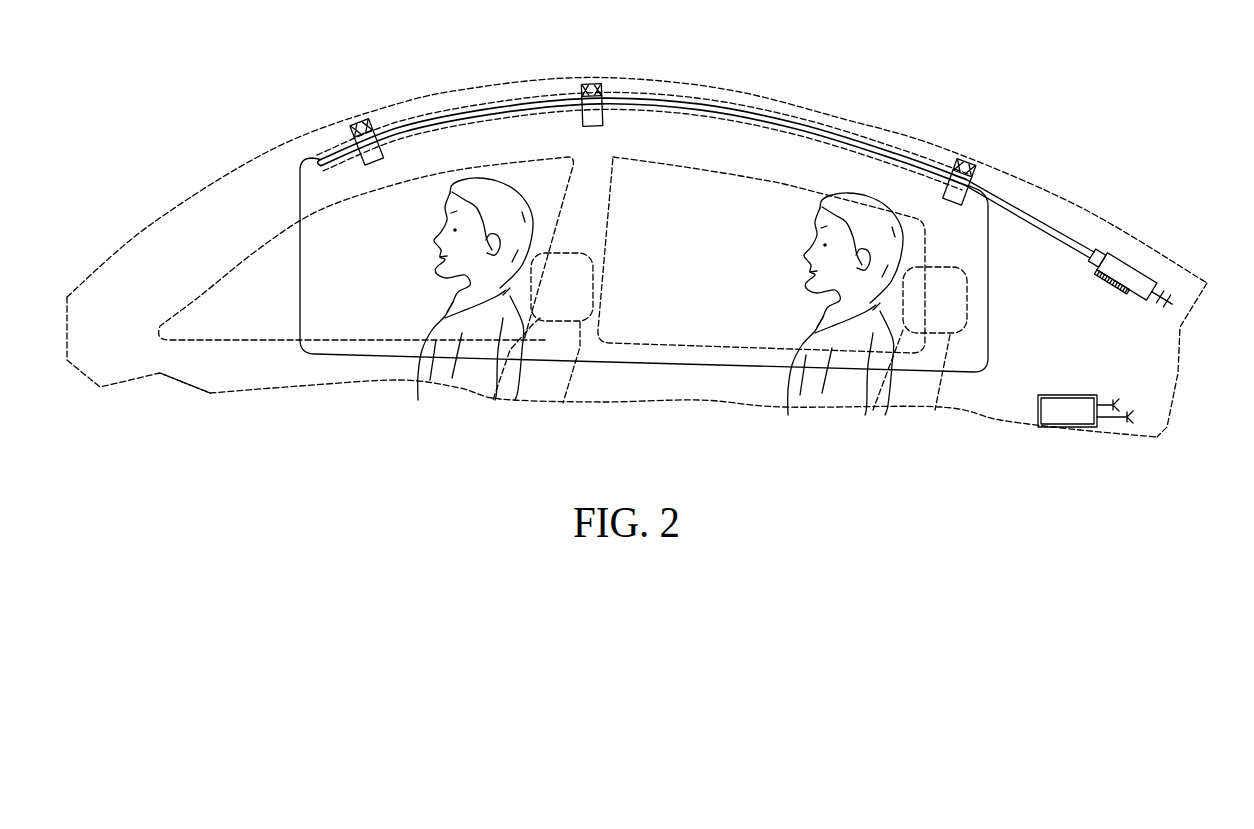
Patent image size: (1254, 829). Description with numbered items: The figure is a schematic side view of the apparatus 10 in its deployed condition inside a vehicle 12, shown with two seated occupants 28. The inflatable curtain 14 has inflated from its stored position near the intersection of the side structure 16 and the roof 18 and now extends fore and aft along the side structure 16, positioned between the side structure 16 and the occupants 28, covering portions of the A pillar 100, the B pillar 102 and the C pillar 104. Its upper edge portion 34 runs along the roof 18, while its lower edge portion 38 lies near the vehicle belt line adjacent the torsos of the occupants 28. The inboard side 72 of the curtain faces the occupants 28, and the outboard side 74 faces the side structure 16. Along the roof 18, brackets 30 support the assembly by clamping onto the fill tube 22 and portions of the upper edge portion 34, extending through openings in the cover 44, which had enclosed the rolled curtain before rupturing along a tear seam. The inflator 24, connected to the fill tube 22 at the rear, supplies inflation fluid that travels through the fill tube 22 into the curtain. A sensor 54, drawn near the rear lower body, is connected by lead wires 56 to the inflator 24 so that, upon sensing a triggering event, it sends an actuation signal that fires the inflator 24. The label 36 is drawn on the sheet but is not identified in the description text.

The apparatus 10 is at (342, 63).
The vehicle 12 is at (277, 150).
The inflatable curtain 14 is at (662, 310).
The side structure 16 is at (618, 383).
The roof 18 is at (737, 90).
The fill tube 22 is at (1047, 232).
The inflator 24 is at (1120, 275).
The occupants 28 is at (418, 257).
The brackets 30 is at (353, 120).
The upper edge portion 34 is at (803, 127).
The front pillar 36 is at (273, 343).
The lower edge portion 38 is at (723, 360).
The cover 44 is at (467, 150).
The sensor 54 is at (1065, 428).
The lead wires 56 is at (1177, 290).
The inboard side 72 is at (380, 347).
The outboard side 74 is at (330, 280).
The A pillar 100 is at (203, 205).
The B pillar 102 is at (587, 230).
The C pillar 104 is at (1145, 367).